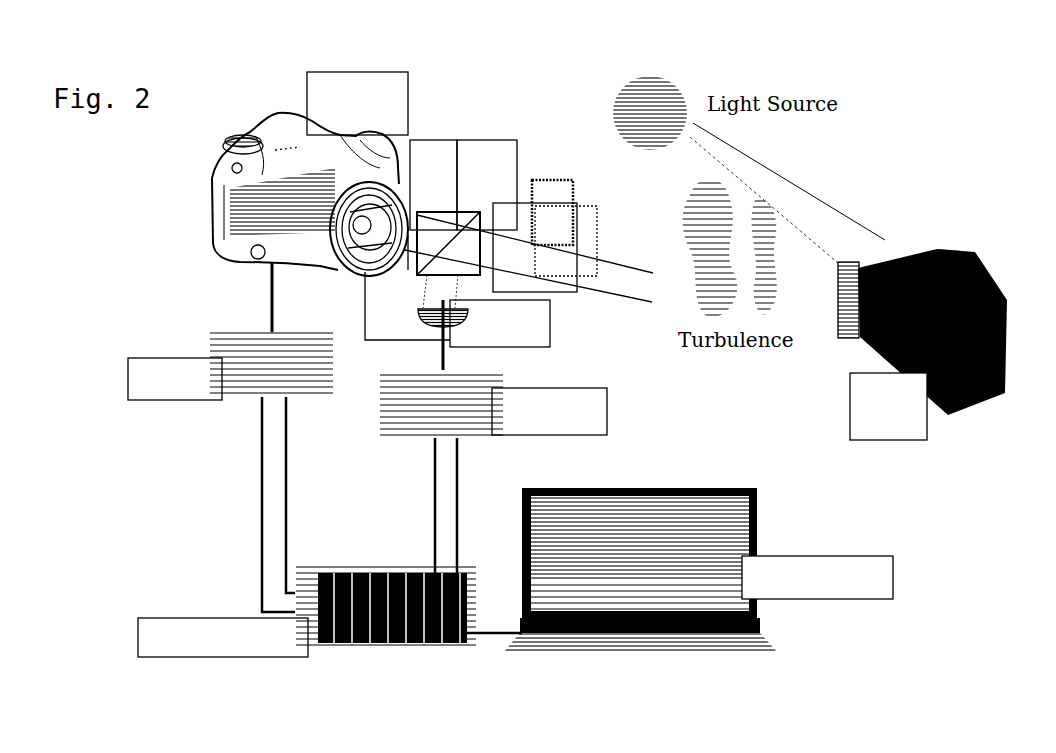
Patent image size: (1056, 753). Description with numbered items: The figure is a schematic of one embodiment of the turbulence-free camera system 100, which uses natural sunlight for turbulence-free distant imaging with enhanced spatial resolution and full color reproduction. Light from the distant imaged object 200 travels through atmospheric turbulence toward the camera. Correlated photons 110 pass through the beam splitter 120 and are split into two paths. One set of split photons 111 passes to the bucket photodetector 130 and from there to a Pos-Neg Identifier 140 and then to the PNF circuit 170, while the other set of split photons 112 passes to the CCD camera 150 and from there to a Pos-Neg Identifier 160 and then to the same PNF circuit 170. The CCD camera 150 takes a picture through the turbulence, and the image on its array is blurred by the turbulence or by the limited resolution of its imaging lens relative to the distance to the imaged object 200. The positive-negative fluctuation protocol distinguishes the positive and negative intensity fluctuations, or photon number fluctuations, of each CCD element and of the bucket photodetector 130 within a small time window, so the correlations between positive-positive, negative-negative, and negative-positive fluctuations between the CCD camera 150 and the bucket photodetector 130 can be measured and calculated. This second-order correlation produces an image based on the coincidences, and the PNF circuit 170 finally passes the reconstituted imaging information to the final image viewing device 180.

The turbulence-free camera system 100 is at (260, 222).
The correlated photons 110 is at (545, 235).
The split photons 111 is at (407, 309).
The split photons 112 is at (445, 223).
The beam splitter 120 is at (490, 184).
The bucket photodetector 130 is at (494, 335).
The Pos-Neg Identifier 140 is at (504, 414).
The CCD camera 150 is at (370, 103).
The Pos-Neg Identifier 160 is at (220, 376).
The PNF circuit 170 is at (297, 611).
The final image viewing device 180 is at (698, 570).
The imaged object 200 is at (922, 344).